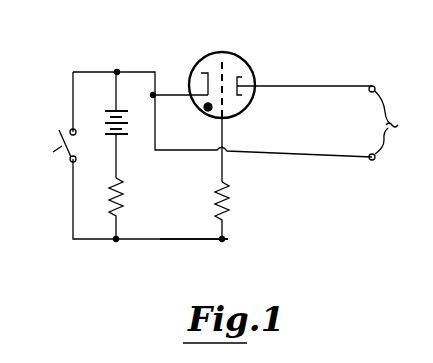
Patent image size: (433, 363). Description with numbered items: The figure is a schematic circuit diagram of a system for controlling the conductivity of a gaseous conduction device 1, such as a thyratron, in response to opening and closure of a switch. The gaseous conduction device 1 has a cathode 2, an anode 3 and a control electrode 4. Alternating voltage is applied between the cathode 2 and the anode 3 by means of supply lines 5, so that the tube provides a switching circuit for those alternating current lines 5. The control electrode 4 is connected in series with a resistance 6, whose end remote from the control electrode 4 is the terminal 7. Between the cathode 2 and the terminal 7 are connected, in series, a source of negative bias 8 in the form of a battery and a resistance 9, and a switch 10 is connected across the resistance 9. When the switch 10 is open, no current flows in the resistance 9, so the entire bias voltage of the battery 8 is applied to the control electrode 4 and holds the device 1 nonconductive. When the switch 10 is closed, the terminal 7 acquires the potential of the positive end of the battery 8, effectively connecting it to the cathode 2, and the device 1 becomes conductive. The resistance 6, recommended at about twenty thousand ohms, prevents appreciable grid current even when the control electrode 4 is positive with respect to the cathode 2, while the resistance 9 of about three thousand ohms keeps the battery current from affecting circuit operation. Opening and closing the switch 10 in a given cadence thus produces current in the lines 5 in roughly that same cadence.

The gaseous conduction device 1 is at (253, 70).
The cathode 2 is at (205, 80).
The anode 3 is at (240, 92).
The control electrode 4 is at (222, 63).
The supply lines 5 is at (322, 88).
The resistance 6 is at (228, 203).
The terminal 7 is at (229, 240).
The source of negative bias 8 is at (112, 135).
The resistance 9 is at (122, 208).
The switch 10 is at (66, 151).